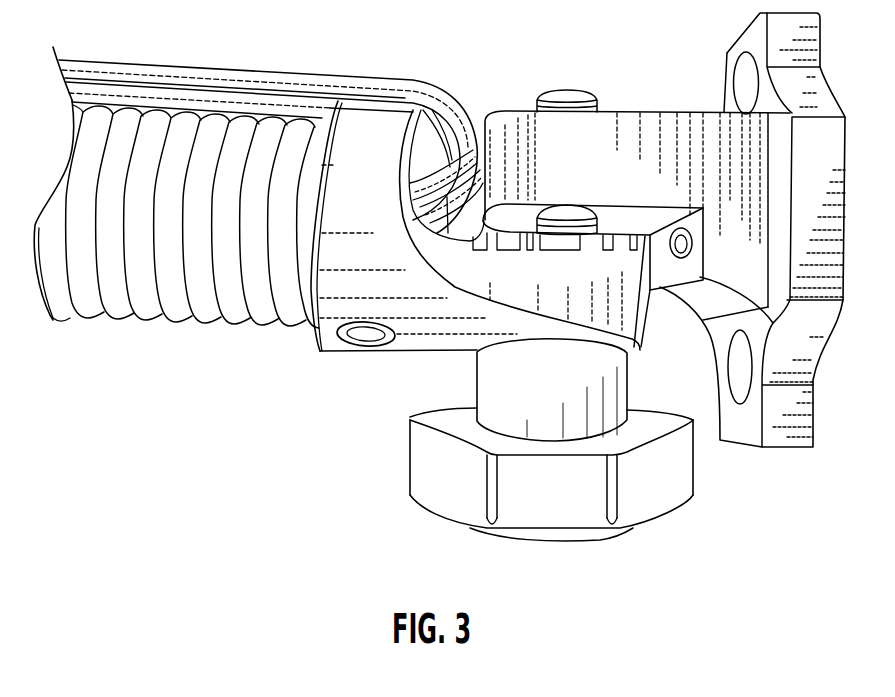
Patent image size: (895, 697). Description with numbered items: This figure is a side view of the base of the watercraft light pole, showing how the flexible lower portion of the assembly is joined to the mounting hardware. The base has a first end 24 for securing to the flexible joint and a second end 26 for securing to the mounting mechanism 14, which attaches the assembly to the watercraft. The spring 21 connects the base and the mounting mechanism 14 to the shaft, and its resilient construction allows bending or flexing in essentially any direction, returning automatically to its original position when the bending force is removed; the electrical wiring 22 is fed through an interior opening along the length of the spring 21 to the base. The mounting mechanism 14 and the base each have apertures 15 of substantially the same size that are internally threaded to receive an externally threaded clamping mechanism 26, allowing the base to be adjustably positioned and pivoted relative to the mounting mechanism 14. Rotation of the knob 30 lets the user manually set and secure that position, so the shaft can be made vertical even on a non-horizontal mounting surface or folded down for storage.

The mounting mechanism 14 is at (667, 120).
The apertures 15 is at (740, 380).
The spring 21 is at (153, 310).
The electrical wiring 22 is at (176, 36).
The first end 24 is at (308, 70).
The second end 26 is at (553, 303).
The knob 30 is at (460, 507).